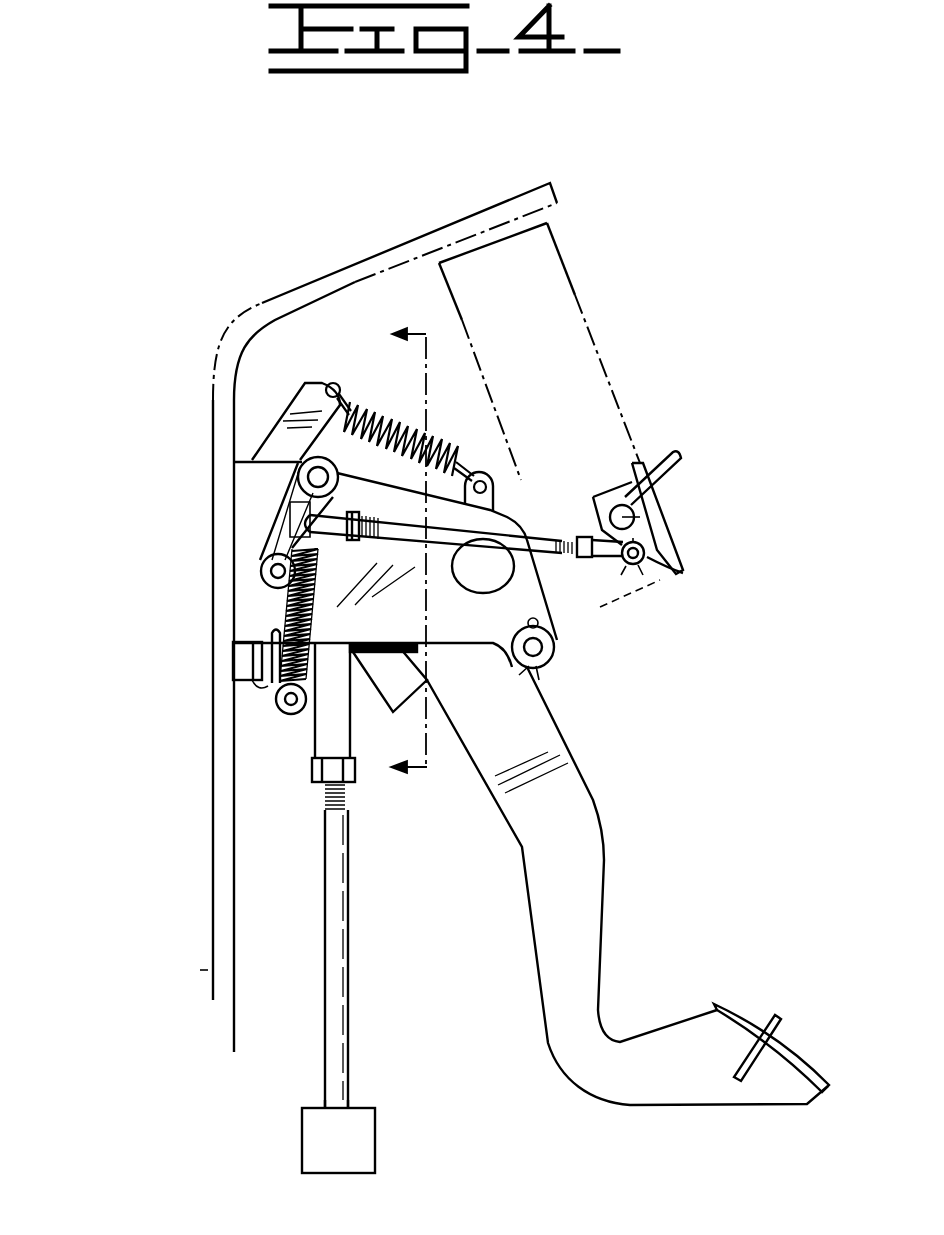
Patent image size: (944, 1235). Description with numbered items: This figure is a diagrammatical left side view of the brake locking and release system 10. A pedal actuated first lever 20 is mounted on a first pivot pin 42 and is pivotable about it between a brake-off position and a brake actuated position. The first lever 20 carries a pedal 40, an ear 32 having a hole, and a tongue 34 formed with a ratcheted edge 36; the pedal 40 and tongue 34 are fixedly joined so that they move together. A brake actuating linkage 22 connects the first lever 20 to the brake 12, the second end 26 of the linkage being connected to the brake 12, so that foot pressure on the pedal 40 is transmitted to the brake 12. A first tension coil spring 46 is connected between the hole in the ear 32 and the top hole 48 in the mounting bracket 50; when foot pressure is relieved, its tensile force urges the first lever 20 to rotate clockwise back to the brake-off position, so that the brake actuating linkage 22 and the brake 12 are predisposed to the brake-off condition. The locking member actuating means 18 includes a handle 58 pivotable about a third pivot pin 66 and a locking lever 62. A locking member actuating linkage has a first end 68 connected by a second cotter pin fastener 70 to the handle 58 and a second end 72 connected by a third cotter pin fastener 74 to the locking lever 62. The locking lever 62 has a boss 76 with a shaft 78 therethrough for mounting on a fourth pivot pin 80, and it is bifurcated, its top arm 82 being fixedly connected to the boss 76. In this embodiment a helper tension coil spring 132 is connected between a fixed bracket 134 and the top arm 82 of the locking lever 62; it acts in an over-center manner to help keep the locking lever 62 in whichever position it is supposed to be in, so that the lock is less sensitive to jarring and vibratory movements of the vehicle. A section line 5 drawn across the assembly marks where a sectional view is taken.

The brake locking and release system 10 is at (160, 301).
The brake 12 is at (338, 1140).
The locking member actuating means 18 is at (578, 465).
The pedal actuated first lever 20 is at (593, 802).
The brake actuating linkage 22 is at (335, 883).
The second end 26 is at (351, 1107).
The ear 32 is at (482, 470).
The tongue 34 is at (430, 683).
The ratcheted edge 36 is at (385, 692).
The pedal 40 is at (760, 1025).
The first pivot pin 42 is at (497, 572).
The first tension coil spring 46 is at (382, 403).
The top hole 48 is at (324, 383).
The mounting bracket 50 is at (213, 420).
The handle 58 is at (679, 470).
The locking lever 62 is at (262, 566).
The third pivot pin 66 is at (640, 517).
The first end 68 is at (685, 578).
The second cotter pin fastener 70 is at (653, 578).
The second end 72 is at (298, 490).
The third cotter pin fastener 74 is at (288, 507).
The boss 76 is at (287, 555).
The shaft 78 is at (285, 603).
The fourth pivot pin 80 is at (273, 580).
The top arm 82 is at (275, 527).
The section line 5- 5 is at (413, 548).
The helper tension coil spring 132 is at (270, 672).
The fixed bracket 134 is at (274, 712).